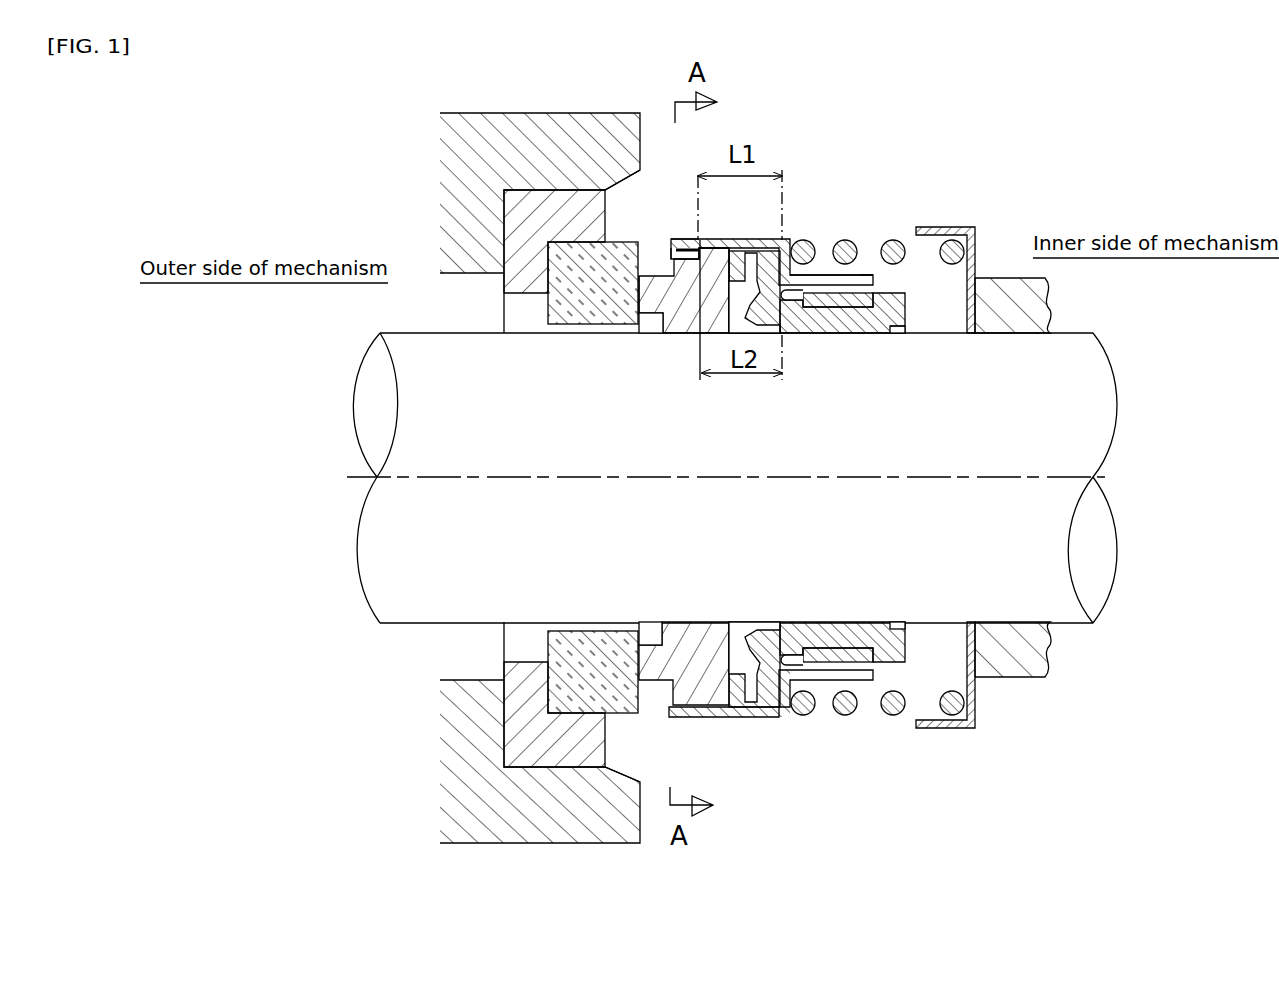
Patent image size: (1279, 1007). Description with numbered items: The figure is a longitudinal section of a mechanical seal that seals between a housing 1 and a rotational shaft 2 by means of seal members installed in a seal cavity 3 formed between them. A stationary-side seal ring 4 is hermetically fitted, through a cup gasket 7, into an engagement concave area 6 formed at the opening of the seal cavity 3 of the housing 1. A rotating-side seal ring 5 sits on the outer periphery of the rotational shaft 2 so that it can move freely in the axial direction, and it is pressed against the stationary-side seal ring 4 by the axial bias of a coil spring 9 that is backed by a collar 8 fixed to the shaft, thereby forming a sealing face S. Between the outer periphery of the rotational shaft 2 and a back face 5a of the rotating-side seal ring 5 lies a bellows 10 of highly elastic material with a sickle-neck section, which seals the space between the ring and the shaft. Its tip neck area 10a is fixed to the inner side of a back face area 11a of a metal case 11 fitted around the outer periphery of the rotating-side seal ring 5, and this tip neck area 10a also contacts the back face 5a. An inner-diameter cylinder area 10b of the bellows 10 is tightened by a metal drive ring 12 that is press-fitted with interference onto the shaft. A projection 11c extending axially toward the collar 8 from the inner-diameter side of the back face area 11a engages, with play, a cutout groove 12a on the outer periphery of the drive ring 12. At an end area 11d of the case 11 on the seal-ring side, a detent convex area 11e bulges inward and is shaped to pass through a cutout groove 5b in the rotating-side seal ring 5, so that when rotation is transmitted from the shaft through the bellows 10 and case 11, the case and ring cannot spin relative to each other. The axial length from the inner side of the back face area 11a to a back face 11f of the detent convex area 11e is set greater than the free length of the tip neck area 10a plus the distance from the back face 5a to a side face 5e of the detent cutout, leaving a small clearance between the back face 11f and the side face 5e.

The housing 1 is at (535, 130).
The rotational shaft 2 is at (523, 550).
The seal cavity 3 is at (470, 318).
The stationary-side seal ring 4 is at (557, 308).
The rotating-side seal ring 5 is at (681, 328).
The back face 5a is at (710, 318).
The cutout groove 5b is at (780, 238).
The side face 5e is at (672, 312).
The engagement concave area 6 is at (572, 232).
The cup gasket 7 is at (520, 228).
The collar 8 is at (975, 232).
The coil spring 9 is at (940, 227).
The bellows 10 is at (858, 333).
The tip neck area 10a is at (788, 334).
The inner-diameter cylinder area 10b is at (905, 340).
The case 11 is at (797, 238).
The back face area 11a is at (826, 274).
The projection 11c is at (870, 245).
The end area 11d is at (698, 238).
The detent convex area 11e is at (670, 258).
The back face 11f is at (716, 236).
The drive ring 12 is at (820, 330).
The cutout groove 12a is at (808, 322).
The sealing face S is at (630, 298).